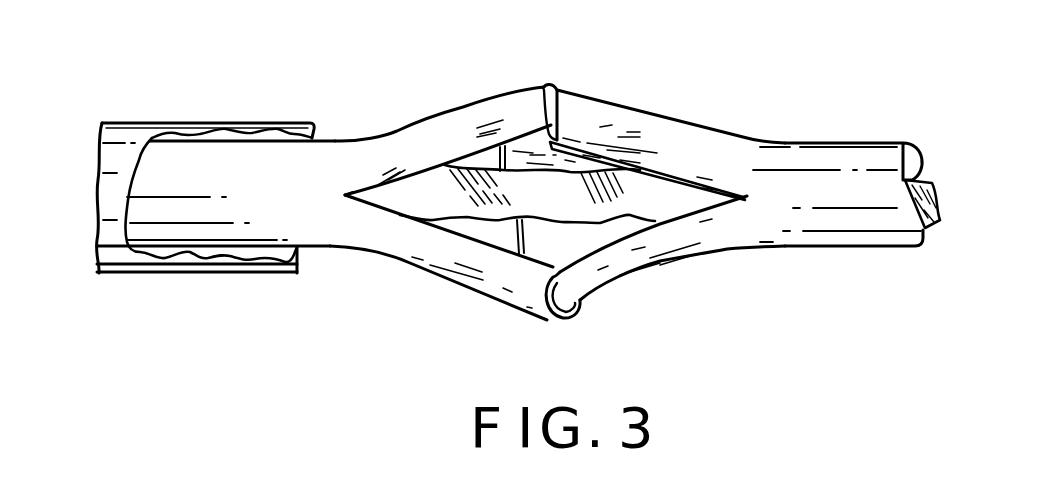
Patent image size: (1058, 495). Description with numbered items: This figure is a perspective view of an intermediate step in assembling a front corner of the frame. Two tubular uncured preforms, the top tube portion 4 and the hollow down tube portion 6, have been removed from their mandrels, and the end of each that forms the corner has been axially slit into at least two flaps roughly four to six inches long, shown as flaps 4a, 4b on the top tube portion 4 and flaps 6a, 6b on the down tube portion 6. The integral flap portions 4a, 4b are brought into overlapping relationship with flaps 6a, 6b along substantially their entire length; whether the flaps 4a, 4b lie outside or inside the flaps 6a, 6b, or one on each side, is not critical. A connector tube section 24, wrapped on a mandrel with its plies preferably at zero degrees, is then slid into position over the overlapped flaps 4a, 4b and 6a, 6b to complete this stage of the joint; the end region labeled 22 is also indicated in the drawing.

The top tube portion 4 is at (332, 227).
The flap 4a is at (487, 110).
The flap 4b is at (505, 275).
The down tube portion 6 is at (868, 220).
The flap 6a is at (683, 140).
The flap 6b is at (650, 245).
The end closure of second tubular member 22 is at (930, 182).
The connector tube section 24 is at (214, 123).